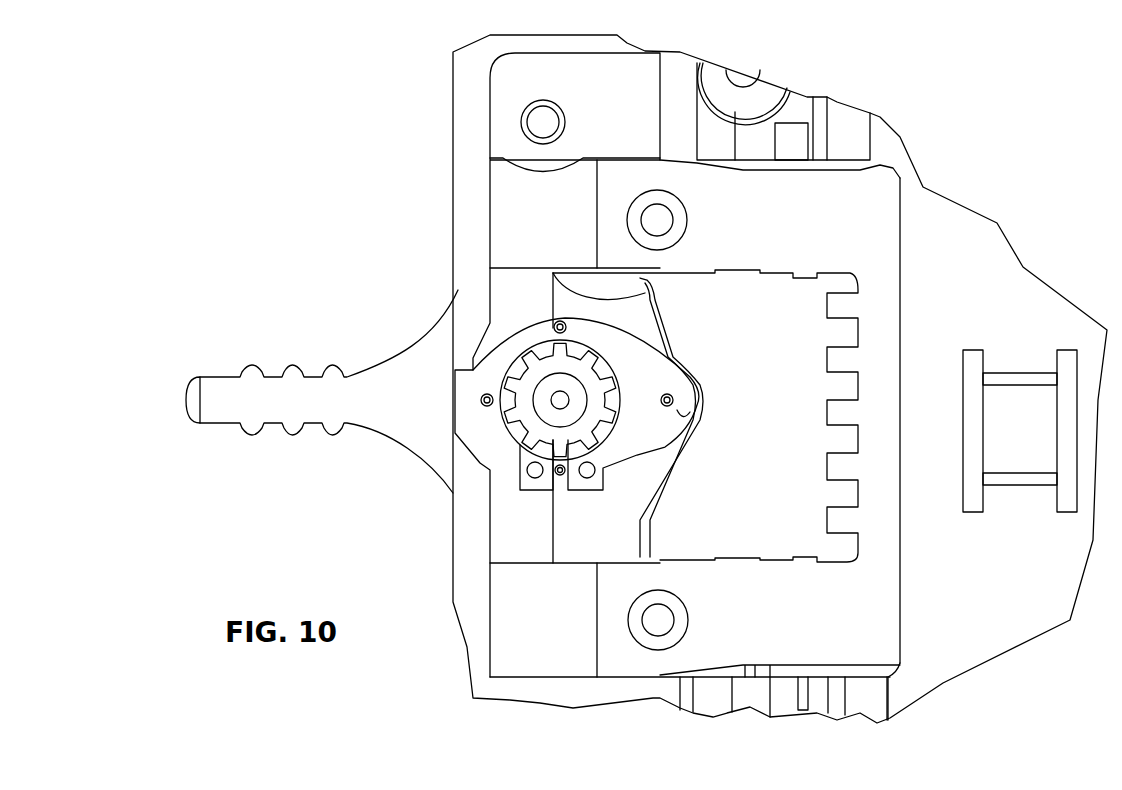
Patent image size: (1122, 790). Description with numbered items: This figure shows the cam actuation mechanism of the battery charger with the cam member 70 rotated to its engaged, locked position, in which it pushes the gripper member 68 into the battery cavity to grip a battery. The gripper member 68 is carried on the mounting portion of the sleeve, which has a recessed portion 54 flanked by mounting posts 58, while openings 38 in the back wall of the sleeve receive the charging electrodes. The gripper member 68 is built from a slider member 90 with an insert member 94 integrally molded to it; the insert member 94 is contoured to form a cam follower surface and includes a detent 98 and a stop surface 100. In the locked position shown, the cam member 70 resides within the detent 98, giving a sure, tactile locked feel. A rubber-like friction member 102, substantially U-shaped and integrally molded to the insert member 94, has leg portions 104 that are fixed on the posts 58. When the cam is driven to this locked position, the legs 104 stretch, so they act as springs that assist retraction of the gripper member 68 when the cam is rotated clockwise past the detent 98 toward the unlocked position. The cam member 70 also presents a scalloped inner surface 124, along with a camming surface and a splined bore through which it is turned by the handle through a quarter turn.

The openings 38 is at (1018, 447).
The recessed portion 54 is at (537, 547).
The mounting posts 58 is at (658, 213).
The gripper member 68 is at (922, 287).
The cam member 70 is at (633, 470).
The slider member 90 is at (573, 535).
The insert member 94 is at (743, 498).
The detent 98 is at (677, 427).
The stop surface 100 is at (553, 273).
The friction member 102 is at (905, 632).
The leg portions 104 is at (850, 193).
The scalloped inner surface 124 is at (475, 363).